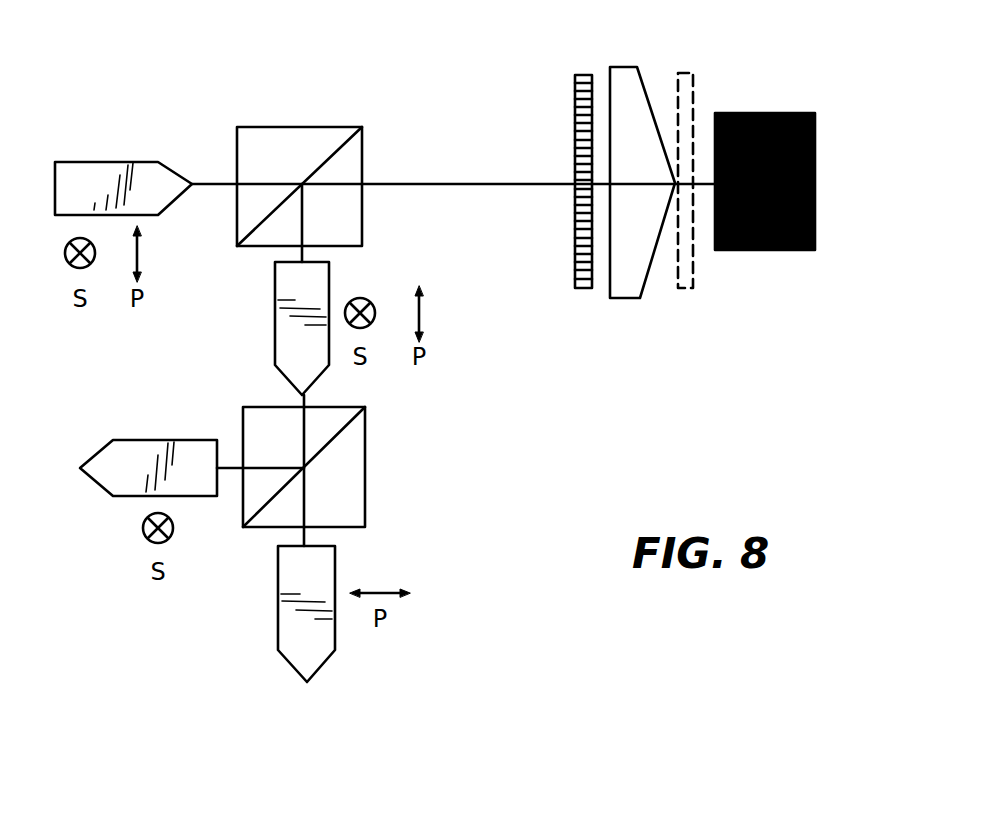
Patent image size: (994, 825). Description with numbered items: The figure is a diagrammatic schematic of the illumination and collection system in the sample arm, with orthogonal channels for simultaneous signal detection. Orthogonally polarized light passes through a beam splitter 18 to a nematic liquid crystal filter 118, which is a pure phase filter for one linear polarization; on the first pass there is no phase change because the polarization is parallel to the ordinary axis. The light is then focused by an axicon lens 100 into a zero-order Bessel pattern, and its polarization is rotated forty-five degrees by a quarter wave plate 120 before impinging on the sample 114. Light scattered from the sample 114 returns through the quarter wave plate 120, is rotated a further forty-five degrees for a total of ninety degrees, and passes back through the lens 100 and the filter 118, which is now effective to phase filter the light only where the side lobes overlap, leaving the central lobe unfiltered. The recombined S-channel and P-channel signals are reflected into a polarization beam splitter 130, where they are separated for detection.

The beam splitter 18 is at (355, 150).
The polarization beam splitter 130 is at (358, 513).
The nematic liquid crystal filter 118 is at (580, 288).
The axicon lens 100 is at (623, 298).
The quarter wave plate 120 is at (686, 289).
The sample 114 is at (815, 115).